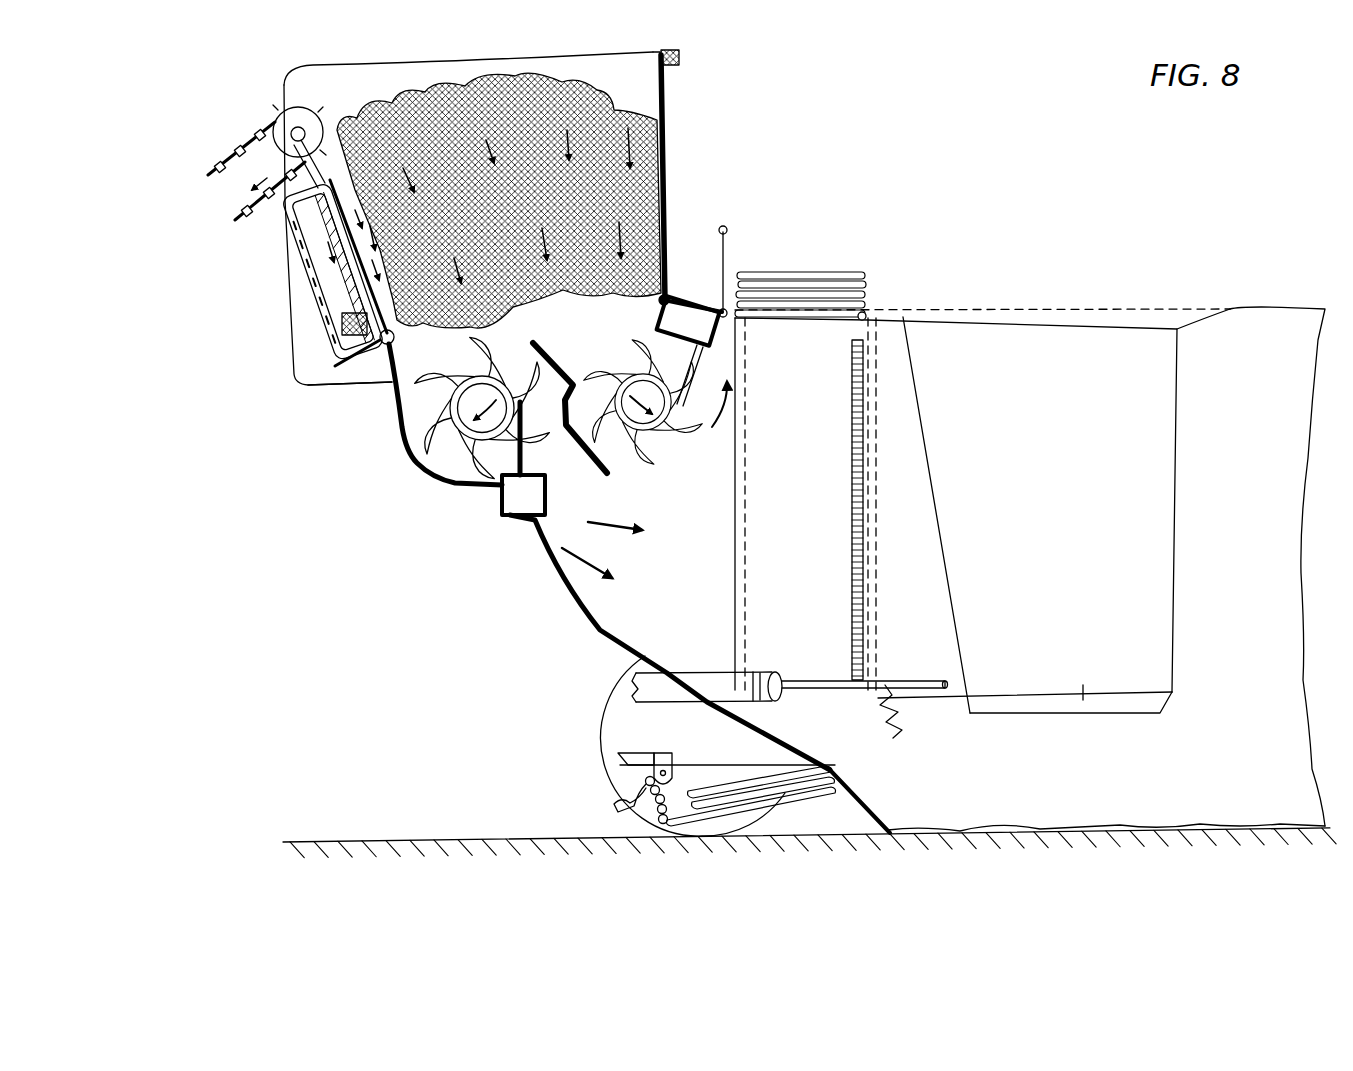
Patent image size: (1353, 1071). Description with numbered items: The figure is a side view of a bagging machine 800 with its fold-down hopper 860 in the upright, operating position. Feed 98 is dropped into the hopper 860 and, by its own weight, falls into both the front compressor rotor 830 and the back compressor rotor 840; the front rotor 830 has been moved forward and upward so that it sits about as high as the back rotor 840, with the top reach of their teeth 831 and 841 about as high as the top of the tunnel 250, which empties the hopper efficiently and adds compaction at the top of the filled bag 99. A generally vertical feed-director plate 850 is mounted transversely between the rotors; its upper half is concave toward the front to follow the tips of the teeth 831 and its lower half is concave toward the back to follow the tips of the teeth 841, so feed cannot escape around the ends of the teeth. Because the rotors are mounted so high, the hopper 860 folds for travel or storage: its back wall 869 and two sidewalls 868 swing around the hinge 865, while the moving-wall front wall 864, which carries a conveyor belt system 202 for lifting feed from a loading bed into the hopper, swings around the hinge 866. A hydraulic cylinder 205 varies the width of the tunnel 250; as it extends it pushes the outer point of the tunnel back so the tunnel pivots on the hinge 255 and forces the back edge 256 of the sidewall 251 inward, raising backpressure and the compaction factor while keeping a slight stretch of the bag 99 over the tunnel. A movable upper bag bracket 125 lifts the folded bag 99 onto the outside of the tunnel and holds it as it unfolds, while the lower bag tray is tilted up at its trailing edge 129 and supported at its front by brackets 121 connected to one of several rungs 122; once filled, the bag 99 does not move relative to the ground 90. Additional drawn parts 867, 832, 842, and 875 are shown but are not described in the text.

The bagging machine 800 is at (952, 160).
The sidewalls 868 is at (411, 64).
The hood bottom wall 867 is at (313, 385).
The fold-down hopper 860 is at (658, 52).
The back wall 869 is at (668, 120).
The feed 98 is at (589, 88).
The front wall 864 is at (333, 172).
The conveyor belt system 202 is at (267, 162).
The hinge 866 is at (396, 340).
The teeth 831 is at (423, 410).
The fan support 832 is at (525, 460).
The compressor rotor 830 is at (488, 378).
The compressor rotor 840 is at (655, 436).
The teeth 841 is at (688, 452).
The feed-director plate 850 is at (600, 470).
The hinge 865 is at (672, 300).
The fan mount 842 is at (692, 362).
The movable upper bag bracket 125 is at (716, 248).
The bag 99 is at (826, 272).
The tunnel 250 is at (1178, 528).
The hinge 255 is at (850, 448).
The back edge 256 is at (1174, 692).
The sidewall 251 is at (1083, 700).
The hydraulic cylinder 205 is at (698, 658).
The lower duct wall 875 is at (770, 722).
The brackets 121 is at (673, 764).
The rungs 122 is at (624, 803).
The trailing edge 129 is at (842, 777).
The ground 90 is at (362, 843).